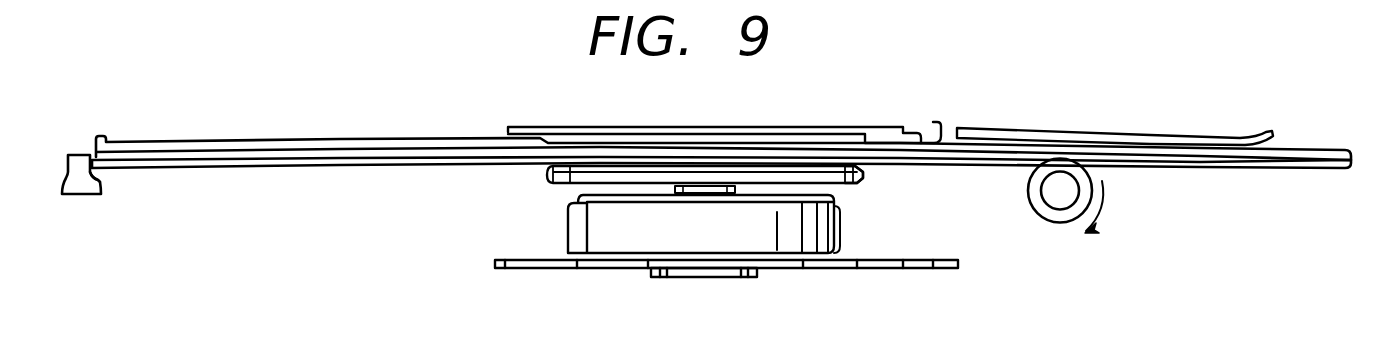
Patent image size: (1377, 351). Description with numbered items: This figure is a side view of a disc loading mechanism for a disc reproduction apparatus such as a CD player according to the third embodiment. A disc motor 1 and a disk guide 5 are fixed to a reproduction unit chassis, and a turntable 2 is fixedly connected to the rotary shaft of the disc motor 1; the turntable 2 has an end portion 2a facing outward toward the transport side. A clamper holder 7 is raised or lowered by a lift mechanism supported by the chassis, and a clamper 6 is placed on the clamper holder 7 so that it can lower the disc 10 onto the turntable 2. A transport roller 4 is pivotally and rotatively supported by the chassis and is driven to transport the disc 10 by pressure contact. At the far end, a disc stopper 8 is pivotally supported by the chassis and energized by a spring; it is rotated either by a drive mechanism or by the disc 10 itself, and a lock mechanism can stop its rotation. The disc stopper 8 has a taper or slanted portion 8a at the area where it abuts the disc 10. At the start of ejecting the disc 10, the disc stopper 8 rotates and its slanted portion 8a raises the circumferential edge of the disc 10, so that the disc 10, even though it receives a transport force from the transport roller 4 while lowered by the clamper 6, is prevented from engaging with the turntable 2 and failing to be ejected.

The disc motor 1 is at (568, 226).
The turntable 2 is at (547, 172).
The end portion of plate 2a is at (872, 176).
The transport roller 4 is at (1046, 216).
The disk guide 5 is at (1160, 142).
The clamper 6 is at (852, 128).
The clamper holder 7 is at (160, 142).
The disc stopper 8 is at (77, 156).
The slanted portion 8a is at (101, 182).
The disc 10 is at (320, 160).